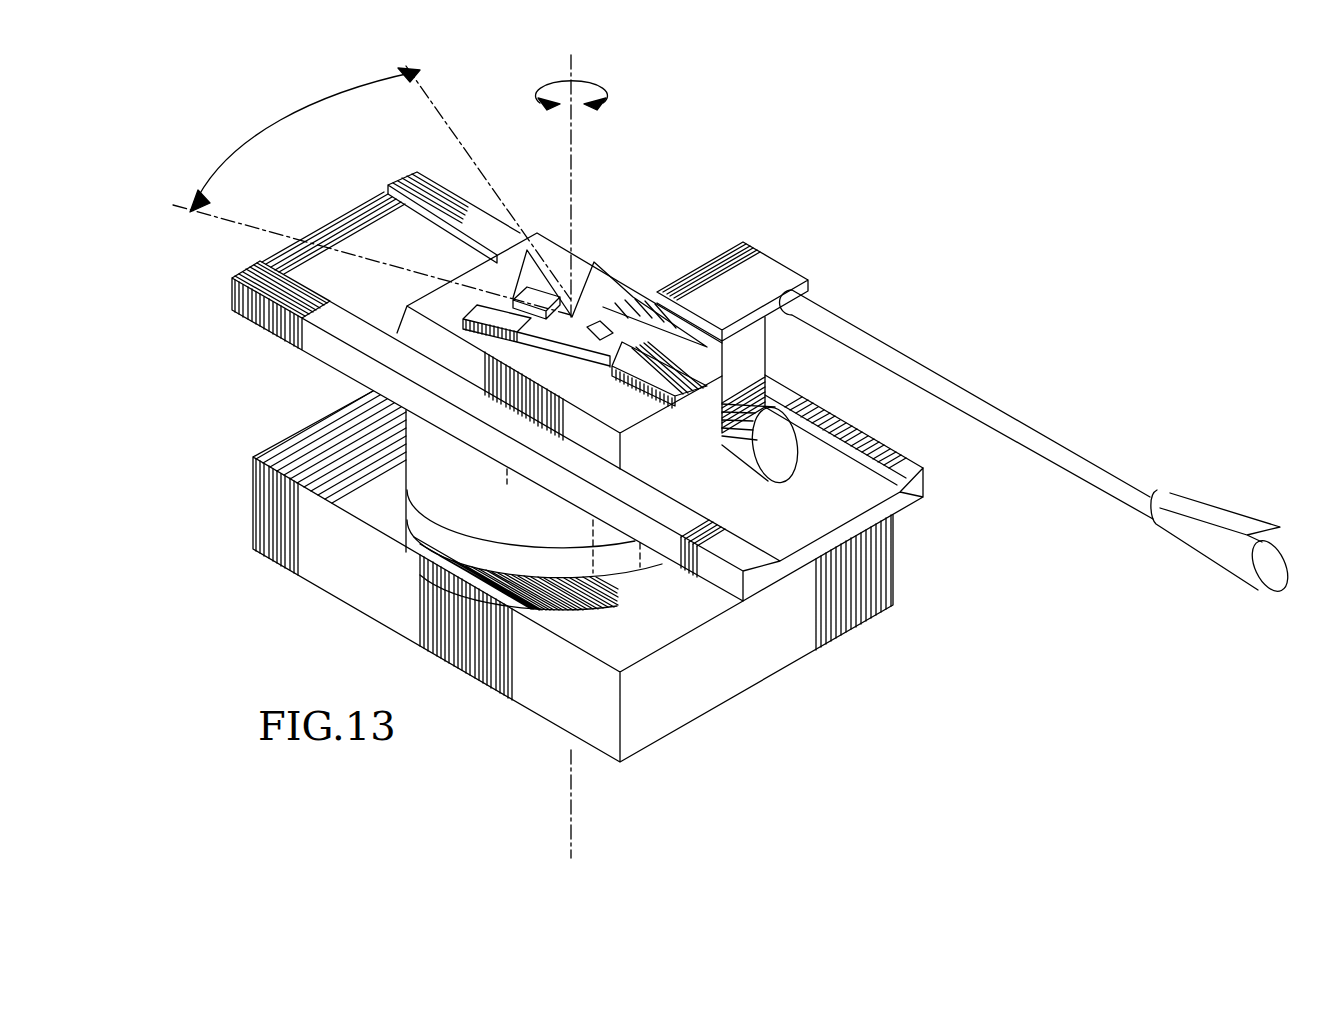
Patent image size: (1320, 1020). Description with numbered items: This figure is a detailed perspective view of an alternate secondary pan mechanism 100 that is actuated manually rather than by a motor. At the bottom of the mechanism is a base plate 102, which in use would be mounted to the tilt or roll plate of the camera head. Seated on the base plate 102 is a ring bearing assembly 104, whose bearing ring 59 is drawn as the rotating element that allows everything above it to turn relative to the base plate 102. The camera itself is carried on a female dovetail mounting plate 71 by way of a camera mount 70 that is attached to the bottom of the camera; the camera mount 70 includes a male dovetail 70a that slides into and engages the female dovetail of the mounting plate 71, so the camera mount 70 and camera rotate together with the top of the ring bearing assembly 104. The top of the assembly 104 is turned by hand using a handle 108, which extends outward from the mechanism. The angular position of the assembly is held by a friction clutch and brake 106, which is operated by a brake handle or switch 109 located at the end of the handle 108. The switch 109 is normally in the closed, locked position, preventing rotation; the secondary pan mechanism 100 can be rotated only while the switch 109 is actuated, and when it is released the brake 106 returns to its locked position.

The rotary table ring 59 is at (520, 567).
The camera mount 70 is at (583, 300).
The male dovetail 70a is at (690, 458).
The female dovetail mounting plate 71 is at (400, 200).
The secondary pan mechanism 100 is at (772, 167).
The base plate 102 is at (697, 675).
The ring bearing assembly 104 is at (688, 317).
The friction clutch and brake 106 is at (778, 282).
The handle 108 is at (1002, 405).
The brake handle/switch 109 is at (1200, 511).